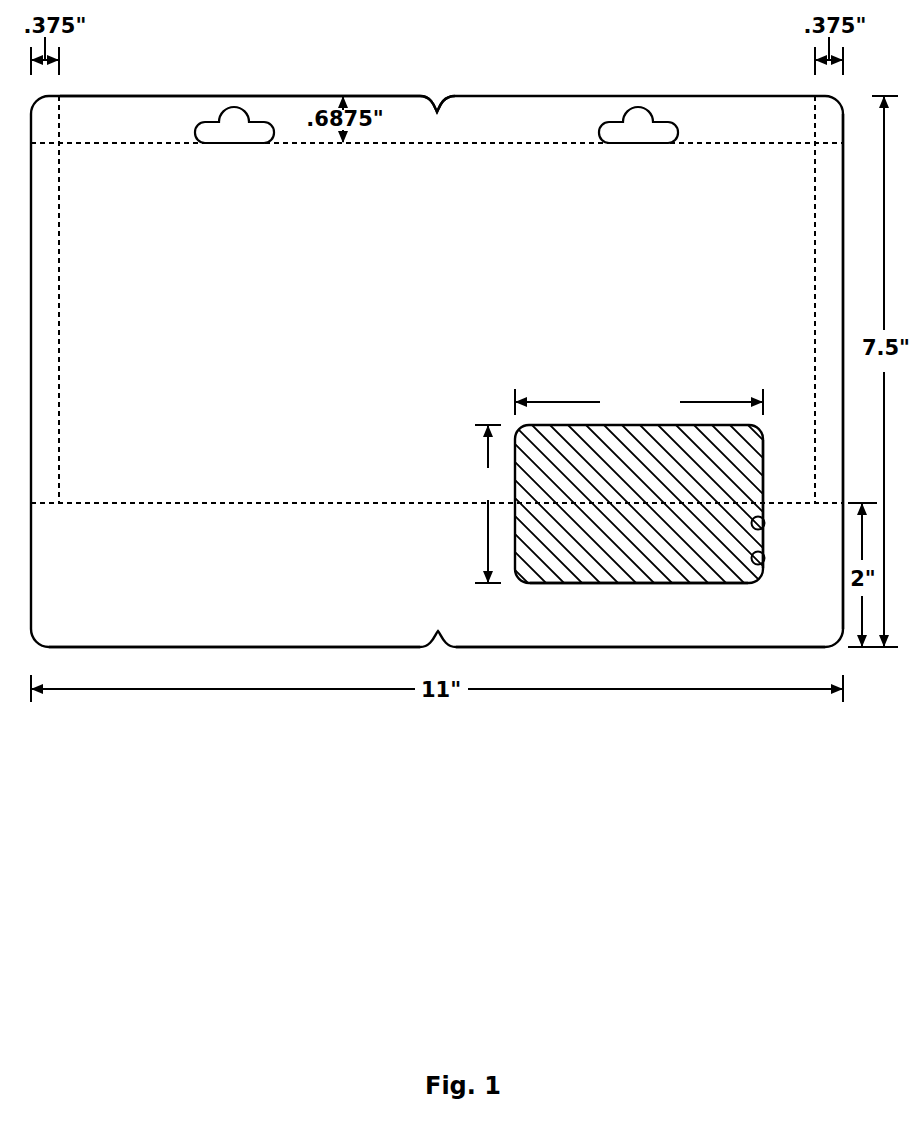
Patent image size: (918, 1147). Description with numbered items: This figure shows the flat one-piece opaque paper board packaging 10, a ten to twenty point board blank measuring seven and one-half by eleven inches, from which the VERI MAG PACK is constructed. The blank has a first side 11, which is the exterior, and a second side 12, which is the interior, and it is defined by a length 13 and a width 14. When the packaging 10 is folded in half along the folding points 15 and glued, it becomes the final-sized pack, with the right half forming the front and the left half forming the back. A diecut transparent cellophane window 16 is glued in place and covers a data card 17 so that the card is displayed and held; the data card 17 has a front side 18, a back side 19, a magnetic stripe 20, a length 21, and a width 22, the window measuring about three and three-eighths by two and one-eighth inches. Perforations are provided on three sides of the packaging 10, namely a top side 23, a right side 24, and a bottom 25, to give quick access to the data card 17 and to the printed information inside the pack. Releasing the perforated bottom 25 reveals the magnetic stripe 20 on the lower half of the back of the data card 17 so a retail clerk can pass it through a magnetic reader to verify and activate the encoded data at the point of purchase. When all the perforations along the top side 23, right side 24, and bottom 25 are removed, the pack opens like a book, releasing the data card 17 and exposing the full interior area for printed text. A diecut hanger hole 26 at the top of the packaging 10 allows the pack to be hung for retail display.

The one-piece opaque paper board packaging 10 is at (437, 342).
The first side 11 is at (437, 371).
The second side 12 is at (292, 96).
The length 13 is at (884, 292).
The width 14 is at (296, 626).
The folding points 15 is at (437, 95).
The diecut transparent cellophane window 16 is at (638, 504).
The data card 17 is at (632, 583).
The front side 18 is at (752, 468).
The back side 19 is at (764, 524).
The magnetic stripe 20 is at (764, 559).
The length 21 is at (565, 402).
The width 22 is at (488, 538).
The top side perforations 23 is at (137, 143).
The right side perforations 24 is at (60, 235).
The bottom perforations 25 is at (219, 503).
The diecut hanger hole 26 is at (638, 123).